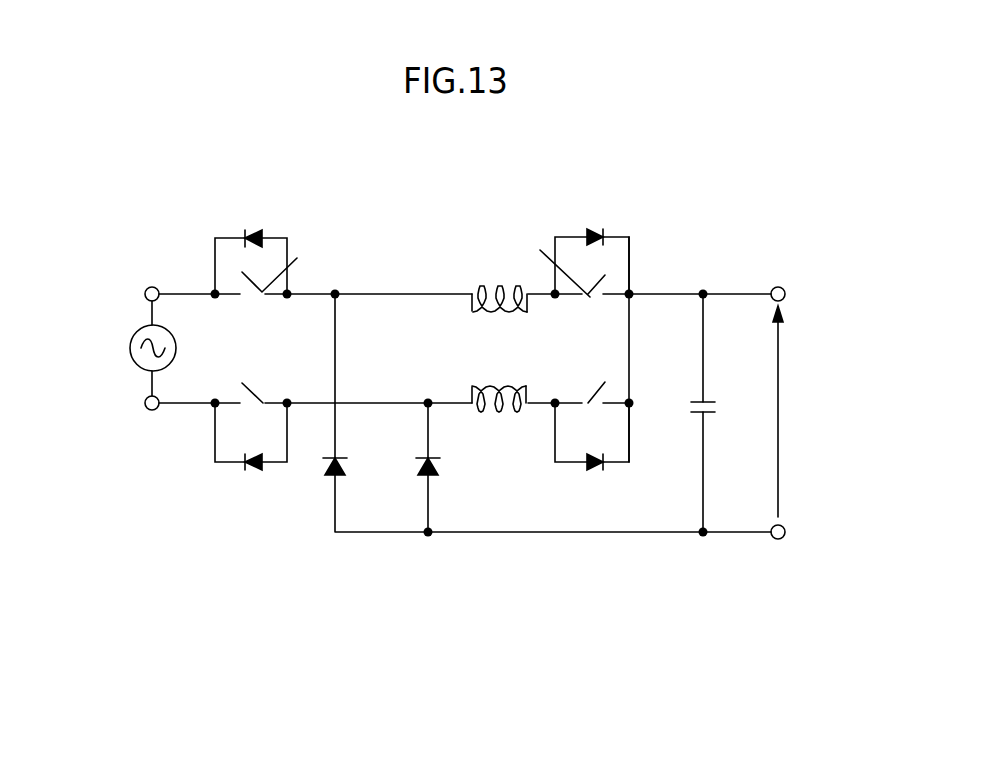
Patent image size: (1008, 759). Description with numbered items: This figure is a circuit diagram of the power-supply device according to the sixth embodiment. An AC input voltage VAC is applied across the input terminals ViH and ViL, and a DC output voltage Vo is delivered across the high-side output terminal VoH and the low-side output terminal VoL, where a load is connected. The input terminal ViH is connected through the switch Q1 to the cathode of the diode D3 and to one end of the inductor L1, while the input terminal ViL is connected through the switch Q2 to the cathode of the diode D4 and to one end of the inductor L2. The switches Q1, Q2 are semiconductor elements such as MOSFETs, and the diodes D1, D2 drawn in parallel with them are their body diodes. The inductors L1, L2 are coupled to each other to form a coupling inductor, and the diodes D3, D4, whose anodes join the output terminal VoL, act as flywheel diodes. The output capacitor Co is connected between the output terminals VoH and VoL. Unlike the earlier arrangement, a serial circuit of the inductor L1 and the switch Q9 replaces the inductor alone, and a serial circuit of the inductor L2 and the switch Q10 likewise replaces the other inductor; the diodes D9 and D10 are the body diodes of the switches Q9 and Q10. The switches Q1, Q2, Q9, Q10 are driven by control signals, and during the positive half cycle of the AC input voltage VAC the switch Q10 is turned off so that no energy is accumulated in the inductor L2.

The input terminal ViH is at (113, 269).
The input terminal ViL is at (113, 424).
The AC input voltage VAC is at (109, 334).
The diode D1 is at (277, 242).
The diode D2 is at (229, 459).
The diode D3 is at (308, 495).
The diode D4 is at (408, 495).
The diode D9 is at (617, 241).
The diode D10 is at (624, 457).
The switch Q1 is at (308, 260).
The switch Q2 is at (282, 373).
The switch Q9 is at (551, 255).
The switch Q10 is at (572, 368).
The inductor L1 is at (482, 274).
The inductor L2 is at (507, 432).
The output capacitor Co is at (725, 375).
The output terminal VoH is at (825, 276).
The output terminal VoL is at (823, 515).
The DC output voltage Vo is at (797, 411).